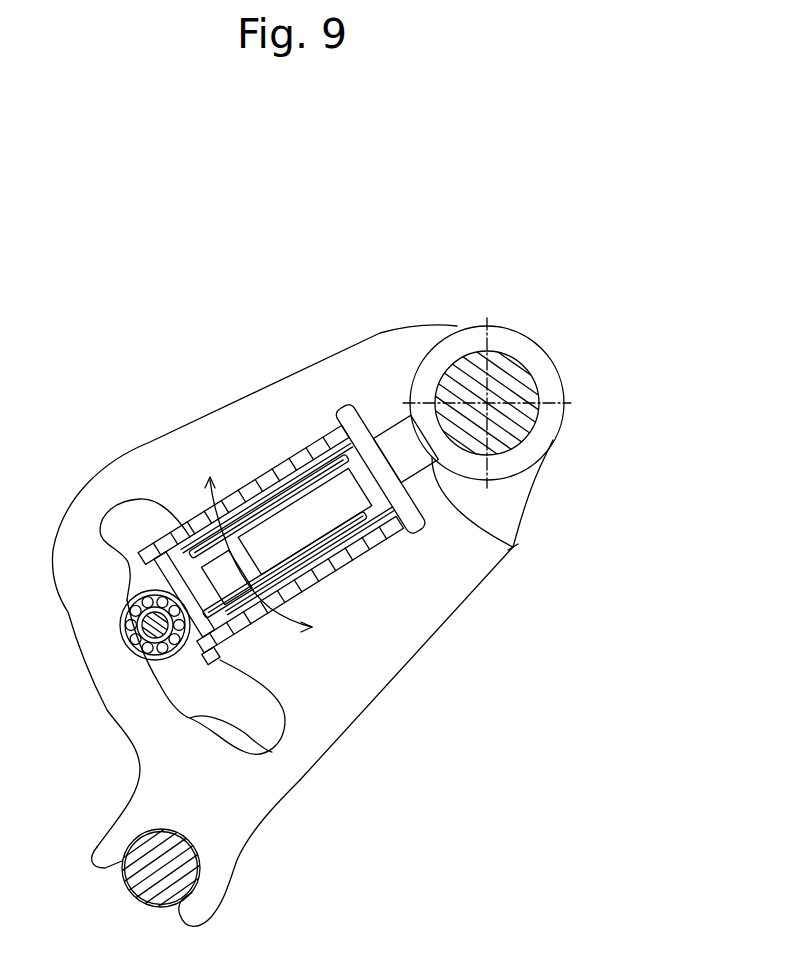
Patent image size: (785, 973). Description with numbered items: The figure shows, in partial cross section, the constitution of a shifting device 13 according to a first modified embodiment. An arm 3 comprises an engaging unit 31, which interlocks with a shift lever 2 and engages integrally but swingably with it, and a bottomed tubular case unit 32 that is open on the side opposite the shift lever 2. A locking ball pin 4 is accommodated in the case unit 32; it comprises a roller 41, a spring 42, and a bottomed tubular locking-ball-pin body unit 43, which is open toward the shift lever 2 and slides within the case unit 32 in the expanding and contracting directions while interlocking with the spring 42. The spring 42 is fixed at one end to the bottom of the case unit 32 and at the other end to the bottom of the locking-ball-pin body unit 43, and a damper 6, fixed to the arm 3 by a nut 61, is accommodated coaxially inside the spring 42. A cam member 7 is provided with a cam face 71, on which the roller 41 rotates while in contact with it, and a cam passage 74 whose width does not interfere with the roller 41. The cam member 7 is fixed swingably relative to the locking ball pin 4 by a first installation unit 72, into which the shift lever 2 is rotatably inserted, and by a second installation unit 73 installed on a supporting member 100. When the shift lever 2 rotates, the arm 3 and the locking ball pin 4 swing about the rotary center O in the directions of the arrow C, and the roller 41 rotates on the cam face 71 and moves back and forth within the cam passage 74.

The shifting device 13 is at (265, 257).
The spring 42 is at (342, 440).
The locking-ball-pin body unit 43 is at (188, 536).
The roller 41 is at (127, 587).
The locking ball pin 4 is at (178, 669).
The supporting member 100 is at (133, 896).
The second installation unit 73 is at (223, 902).
The cam face 71 is at (272, 756).
The cam passage 74 is at (283, 718).
The cam member 7 is at (385, 690).
The case unit 32 is at (370, 563).
The arm 3 is at (428, 537).
The nut 61 is at (512, 547).
The engaging unit 31 is at (532, 490).
The first installation unit 72 is at (563, 377).
The shift lever 2 is at (486, 402).
The rotary center O is at (487, 402).
The damper 6 is at (298, 533).
The arrow C is at (258, 564).